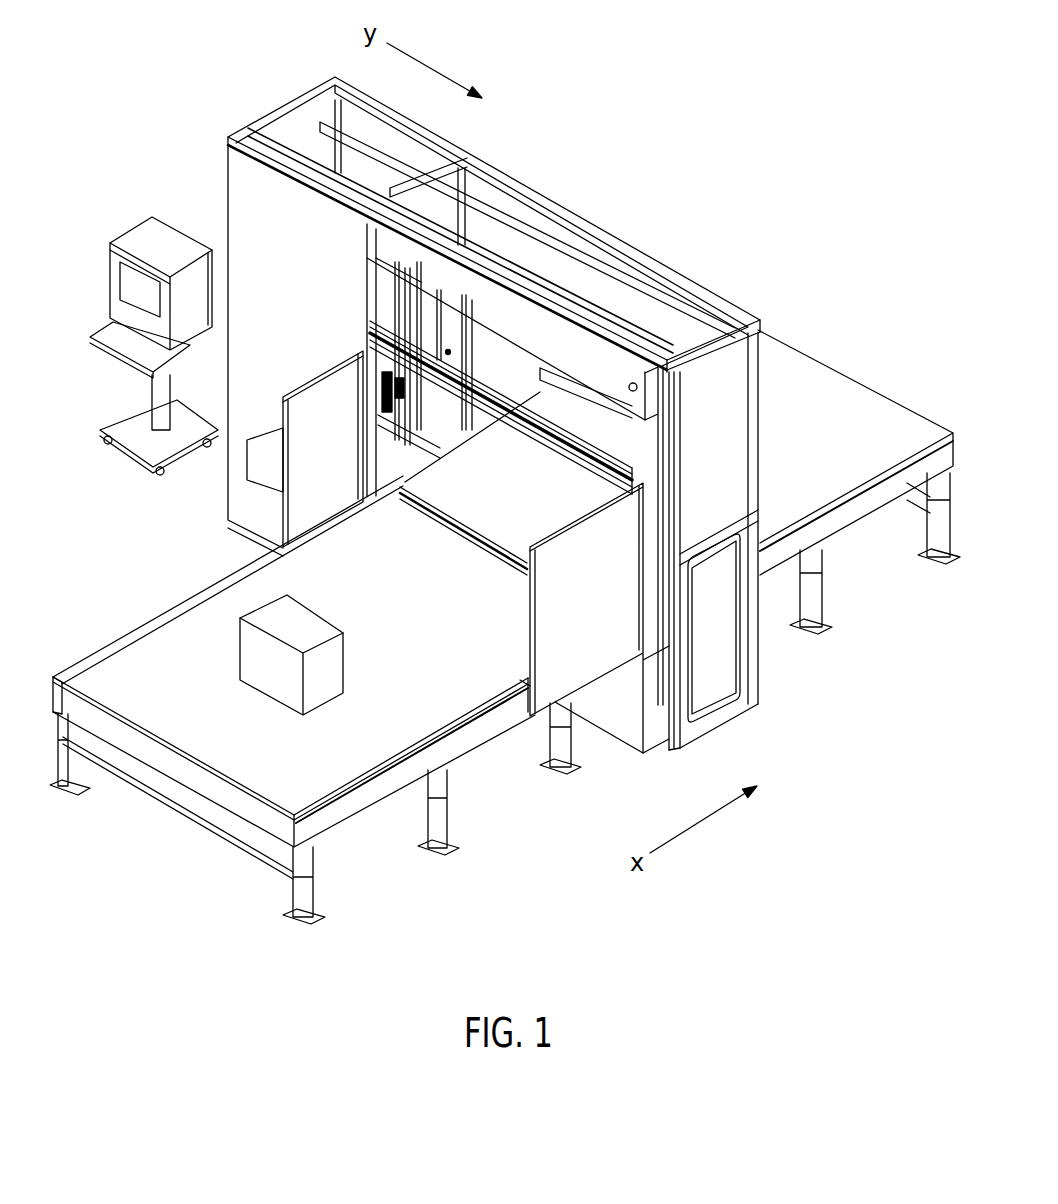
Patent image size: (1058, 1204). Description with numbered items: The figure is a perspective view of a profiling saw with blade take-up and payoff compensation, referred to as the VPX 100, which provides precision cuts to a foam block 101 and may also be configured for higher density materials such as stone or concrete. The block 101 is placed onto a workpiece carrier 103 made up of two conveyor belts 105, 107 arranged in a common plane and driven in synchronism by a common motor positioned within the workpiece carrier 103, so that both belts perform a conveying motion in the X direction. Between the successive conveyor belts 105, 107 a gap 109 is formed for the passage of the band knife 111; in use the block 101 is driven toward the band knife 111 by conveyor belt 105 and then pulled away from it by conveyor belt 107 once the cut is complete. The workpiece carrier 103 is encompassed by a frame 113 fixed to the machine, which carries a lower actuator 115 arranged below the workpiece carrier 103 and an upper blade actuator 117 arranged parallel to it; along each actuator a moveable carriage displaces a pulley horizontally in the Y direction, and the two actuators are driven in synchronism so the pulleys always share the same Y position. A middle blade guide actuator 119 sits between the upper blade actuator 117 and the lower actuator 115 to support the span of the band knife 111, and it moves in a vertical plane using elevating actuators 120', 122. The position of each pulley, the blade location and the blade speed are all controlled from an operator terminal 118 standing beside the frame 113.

The VPX 100 is at (807, 908).
The foam block 101 is at (320, 622).
The workpiece carrier 103 is at (360, 793).
The conveyor belt 105 is at (237, 752).
The conveyor belt 107 is at (833, 413).
The gap 109 is at (407, 500).
The band knife 111 is at (390, 458).
The frame 113 is at (190, 153).
The lower actuator 115 is at (623, 727).
The upper blade actuator 117 is at (540, 313).
The operator terminal 118 is at (117, 302).
The middle blade guide actuator 119 is at (448, 350).
The elevating actuator 120' is at (340, 247).
The elevating actuator 122 is at (677, 477).